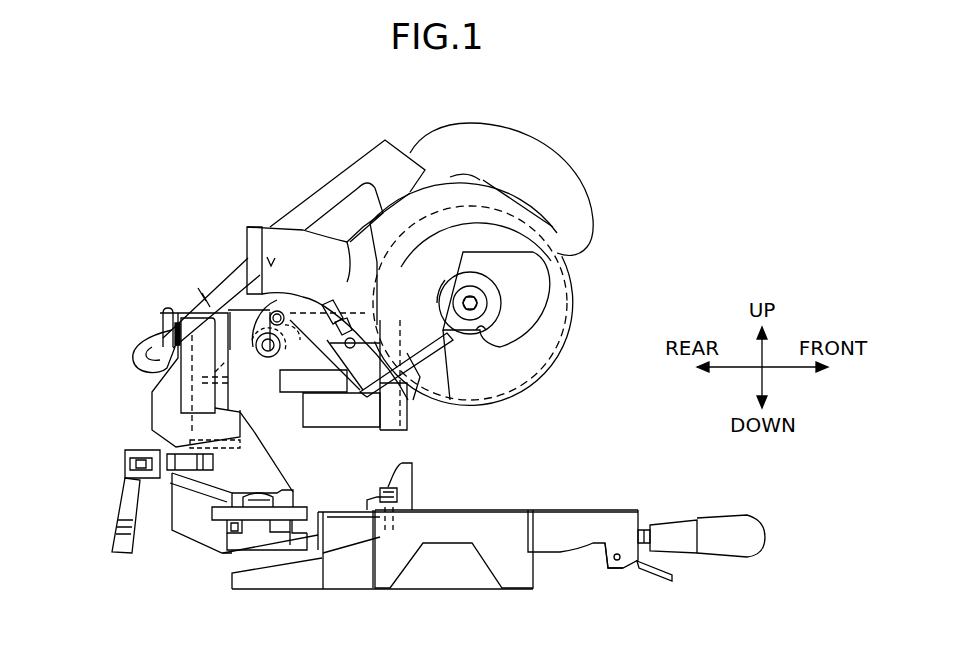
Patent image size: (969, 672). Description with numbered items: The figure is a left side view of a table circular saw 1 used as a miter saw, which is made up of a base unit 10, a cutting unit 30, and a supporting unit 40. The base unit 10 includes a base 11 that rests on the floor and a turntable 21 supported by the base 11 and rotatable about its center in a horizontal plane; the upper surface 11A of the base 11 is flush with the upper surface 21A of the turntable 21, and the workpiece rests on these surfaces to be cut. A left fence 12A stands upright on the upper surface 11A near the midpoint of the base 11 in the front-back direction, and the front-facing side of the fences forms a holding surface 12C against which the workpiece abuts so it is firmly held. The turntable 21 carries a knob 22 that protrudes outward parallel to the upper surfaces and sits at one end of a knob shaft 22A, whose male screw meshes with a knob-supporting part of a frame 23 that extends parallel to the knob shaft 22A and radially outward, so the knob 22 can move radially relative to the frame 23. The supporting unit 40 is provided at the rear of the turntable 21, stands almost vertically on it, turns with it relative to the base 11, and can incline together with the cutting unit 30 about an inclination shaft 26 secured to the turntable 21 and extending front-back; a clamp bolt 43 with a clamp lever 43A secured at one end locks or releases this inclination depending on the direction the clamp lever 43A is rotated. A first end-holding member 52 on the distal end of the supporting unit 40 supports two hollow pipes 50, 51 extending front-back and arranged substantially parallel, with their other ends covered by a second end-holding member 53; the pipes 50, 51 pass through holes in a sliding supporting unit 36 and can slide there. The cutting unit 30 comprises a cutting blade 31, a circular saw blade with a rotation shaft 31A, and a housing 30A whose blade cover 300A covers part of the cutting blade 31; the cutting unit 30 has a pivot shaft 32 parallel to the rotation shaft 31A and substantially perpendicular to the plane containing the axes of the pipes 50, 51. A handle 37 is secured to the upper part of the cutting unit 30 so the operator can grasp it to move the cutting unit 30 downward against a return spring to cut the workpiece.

The table circular saw 1 is at (638, 150).
The base unit 10 is at (172, 582).
The base 11 is at (512, 568).
The upper surface 11A is at (500, 508).
The left fence 12A is at (404, 462).
The holding surface 12C is at (412, 485).
The turntable 21 is at (347, 528).
The upper surface 21A is at (487, 507).
The knob 22 is at (724, 518).
The knob shaft 22A is at (643, 523).
The frame 23 is at (607, 533).
The inclination shaft 26 is at (257, 513).
The cutting unit 30 is at (289, 190).
The housing 30A is at (434, 188).
The cutting blade 31 is at (555, 295).
The rotation shaft 31A is at (478, 305).
The pivot shaft 32 is at (263, 338).
The sliding supporting unit 36 is at (283, 433).
The handle 37 is at (521, 138).
The supporting unit 40 is at (140, 406).
The clamp bolt 43 is at (165, 497).
The clamp lever 43A is at (118, 488).
The pipe 50 is at (363, 312).
The pipe 51 is at (335, 423).
The first end-holding member 52 is at (178, 326).
The second end-holding member 53 is at (402, 347).
The blade cover 300A is at (560, 228).